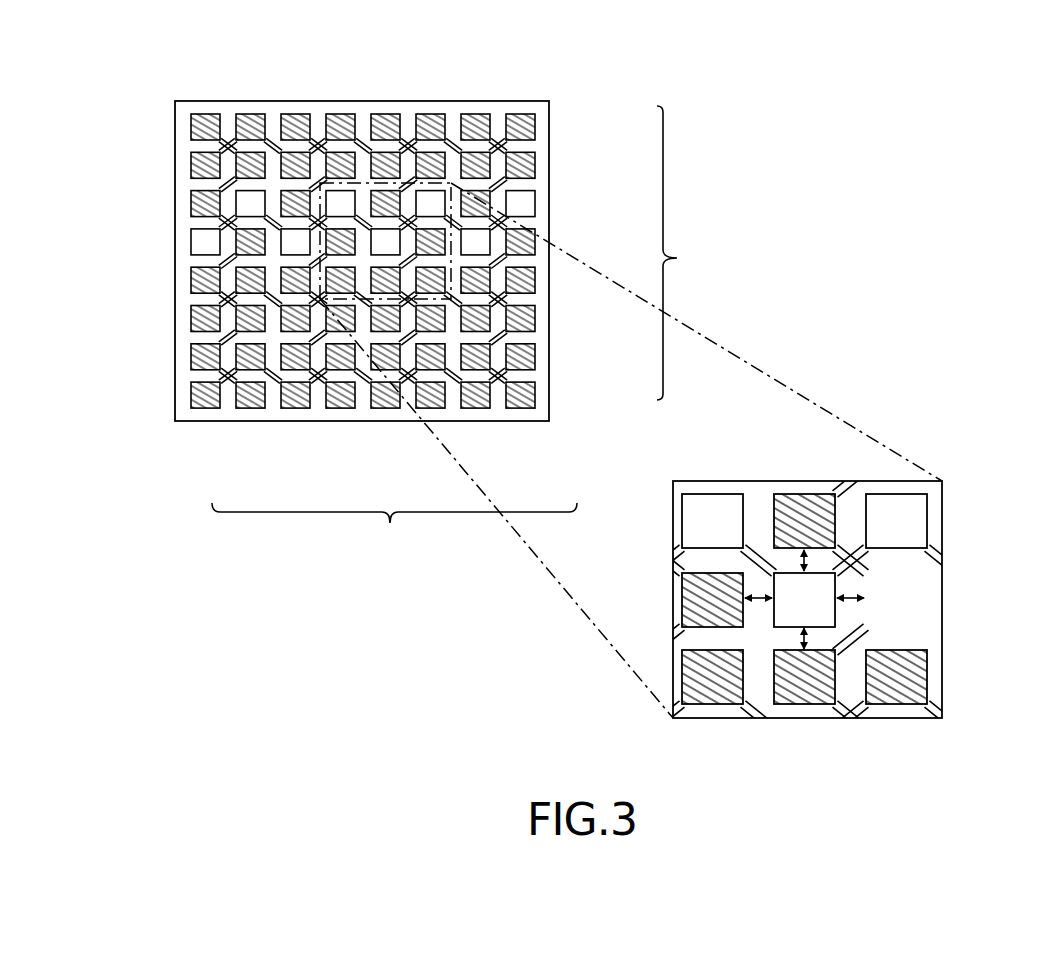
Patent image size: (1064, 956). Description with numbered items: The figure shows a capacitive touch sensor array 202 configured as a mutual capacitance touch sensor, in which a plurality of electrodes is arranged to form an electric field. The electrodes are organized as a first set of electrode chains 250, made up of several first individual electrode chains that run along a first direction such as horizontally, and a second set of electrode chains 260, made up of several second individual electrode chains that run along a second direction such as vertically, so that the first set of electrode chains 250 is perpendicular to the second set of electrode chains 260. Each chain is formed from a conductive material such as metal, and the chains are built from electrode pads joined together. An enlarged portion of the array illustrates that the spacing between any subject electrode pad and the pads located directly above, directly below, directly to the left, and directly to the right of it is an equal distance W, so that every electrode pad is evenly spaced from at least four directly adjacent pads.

The touch sensor array 202 is at (204, 100).
The first set of electrode chains 250 is at (688, 253).
The second set of electrode chains 260 is at (394, 532).
The distance W is at (850, 597).